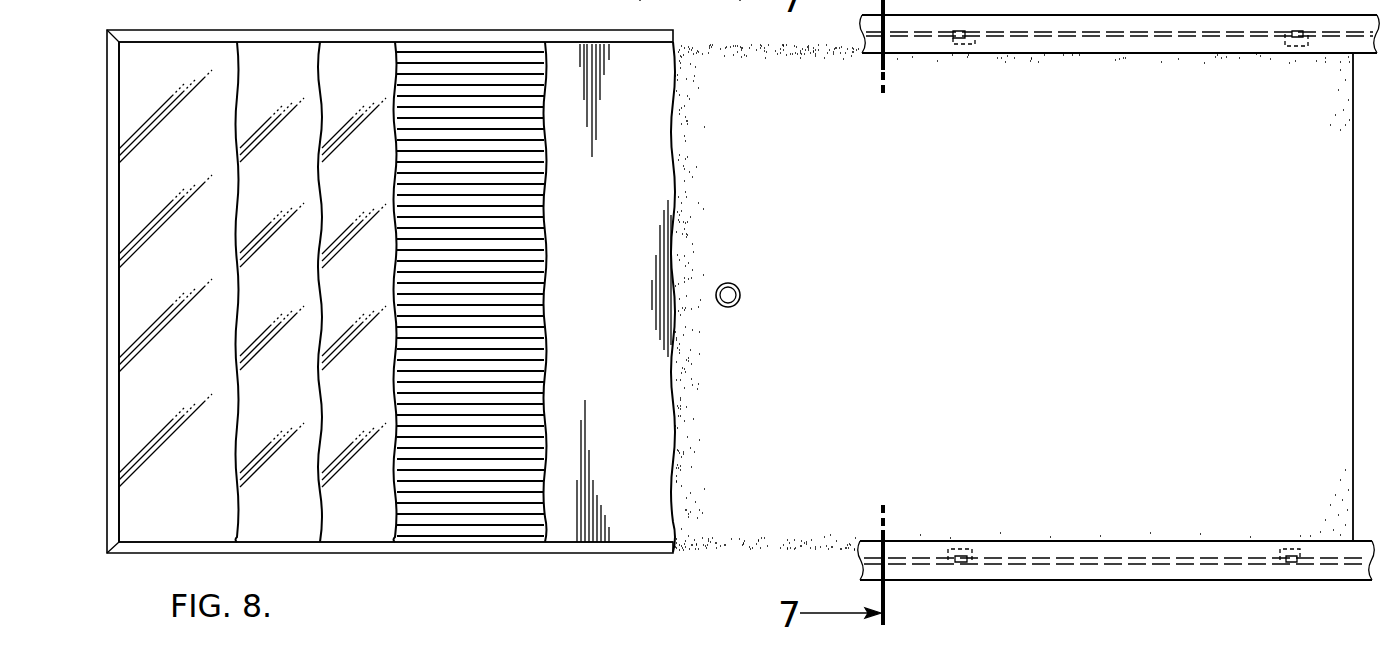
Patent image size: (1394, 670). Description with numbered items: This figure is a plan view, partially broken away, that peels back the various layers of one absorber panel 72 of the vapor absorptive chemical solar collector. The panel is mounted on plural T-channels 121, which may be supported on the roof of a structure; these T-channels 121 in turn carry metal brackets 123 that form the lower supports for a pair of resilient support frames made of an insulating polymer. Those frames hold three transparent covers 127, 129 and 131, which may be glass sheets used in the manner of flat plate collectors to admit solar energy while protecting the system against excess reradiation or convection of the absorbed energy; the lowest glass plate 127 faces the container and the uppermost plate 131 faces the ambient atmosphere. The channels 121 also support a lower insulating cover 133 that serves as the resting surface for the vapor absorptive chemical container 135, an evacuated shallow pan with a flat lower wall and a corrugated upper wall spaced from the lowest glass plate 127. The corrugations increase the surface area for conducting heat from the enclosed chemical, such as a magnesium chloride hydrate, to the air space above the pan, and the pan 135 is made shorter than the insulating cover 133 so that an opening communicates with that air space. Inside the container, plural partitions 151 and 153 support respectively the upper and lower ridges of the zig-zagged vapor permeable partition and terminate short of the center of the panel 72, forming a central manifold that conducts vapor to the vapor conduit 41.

The vapor conduit 41 is at (741, 294).
The absorber panel 72 is at (585, 555).
The T-channel 121 is at (1097, 50).
The metal bracket 123 is at (976, 47).
The transparent cover 127 is at (346, 62).
The transparent cover 129 is at (270, 58).
The transparent cover 131 is at (174, 60).
The lower insulating cover 133 is at (548, 0).
The vapor absorptive chemical container 135 is at (460, 520).
The partition 151 is at (742, 0).
The partition 153 is at (635, 0).